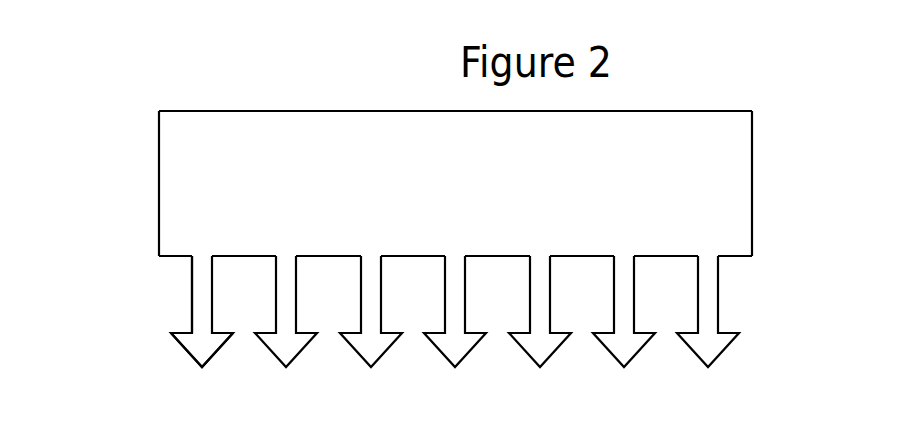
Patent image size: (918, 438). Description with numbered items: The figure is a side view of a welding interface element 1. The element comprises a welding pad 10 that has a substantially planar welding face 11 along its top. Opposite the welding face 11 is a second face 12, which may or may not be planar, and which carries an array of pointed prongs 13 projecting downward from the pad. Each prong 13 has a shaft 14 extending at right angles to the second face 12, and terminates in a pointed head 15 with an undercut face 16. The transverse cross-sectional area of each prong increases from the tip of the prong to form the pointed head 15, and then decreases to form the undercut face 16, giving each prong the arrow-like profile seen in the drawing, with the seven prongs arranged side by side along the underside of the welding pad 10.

The welding interface element 1 is at (128, 176).
The welding pad 10 is at (738, 161).
The welding face 11 is at (273, 111).
The second face 12 is at (573, 258).
The pointed prong 13 is at (150, 271).
The shaft 14 is at (192, 287).
The pointed head 15 is at (186, 353).
The undercut face 16 is at (212, 331).